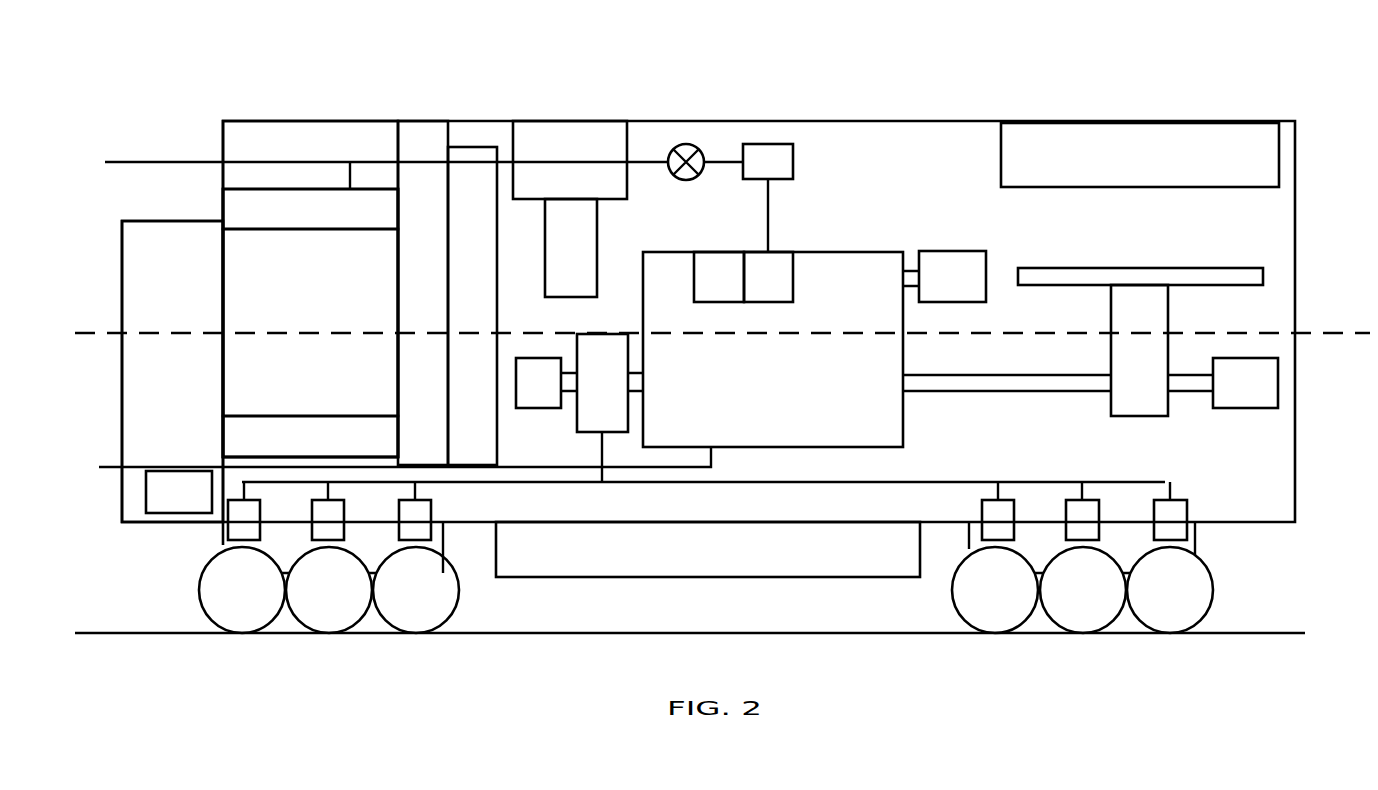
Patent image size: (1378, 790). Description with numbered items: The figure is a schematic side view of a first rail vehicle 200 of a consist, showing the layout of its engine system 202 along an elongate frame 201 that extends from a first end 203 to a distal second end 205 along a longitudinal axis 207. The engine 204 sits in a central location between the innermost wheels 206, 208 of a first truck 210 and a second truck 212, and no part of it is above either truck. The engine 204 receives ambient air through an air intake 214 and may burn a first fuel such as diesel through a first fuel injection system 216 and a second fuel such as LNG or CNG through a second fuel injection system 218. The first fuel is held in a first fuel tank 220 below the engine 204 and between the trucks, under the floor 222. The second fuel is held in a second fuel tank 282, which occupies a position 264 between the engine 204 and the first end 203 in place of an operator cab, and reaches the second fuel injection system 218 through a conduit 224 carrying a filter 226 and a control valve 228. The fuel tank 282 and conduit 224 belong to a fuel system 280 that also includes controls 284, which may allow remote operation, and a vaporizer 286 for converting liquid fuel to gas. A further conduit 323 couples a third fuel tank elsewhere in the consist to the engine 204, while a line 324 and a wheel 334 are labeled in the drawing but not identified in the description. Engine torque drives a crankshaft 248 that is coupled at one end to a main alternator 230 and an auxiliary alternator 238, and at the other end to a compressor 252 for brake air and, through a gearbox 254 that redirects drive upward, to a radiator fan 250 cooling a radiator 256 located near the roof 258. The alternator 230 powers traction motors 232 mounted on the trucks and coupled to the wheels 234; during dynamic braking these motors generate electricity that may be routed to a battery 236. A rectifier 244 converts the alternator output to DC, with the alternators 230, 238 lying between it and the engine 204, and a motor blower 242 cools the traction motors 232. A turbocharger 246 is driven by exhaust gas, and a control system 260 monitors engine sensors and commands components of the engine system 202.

The first rail vehicle 200 is at (968, 55).
The elongate frame 201 is at (1290, 121).
The engine system 202 is at (955, 222).
The first end 203 is at (110, 265).
The engine 204 is at (758, 359).
The second end 205 is at (1320, 300).
The innermost wheels 206 is at (445, 620).
The longitudinal axis 207 is at (117, 330).
The innermost wheels 208 is at (963, 622).
The first truck 210 is at (222, 533).
The second truck 212 is at (1195, 530).
The air intake 214 is at (555, 157).
The first fuel injection system 216 is at (704, 288).
The second fuel injection system 218 is at (753, 288).
The first fuel tank 220 is at (693, 559).
The floor 222 is at (1210, 522).
The conduit 224 is at (640, 161).
The filter 226 is at (779, 180).
The control valve 228 is at (680, 181).
The alternator 230 is at (587, 390).
The traction motors 232 is at (432, 518).
The wheels 234 is at (324, 633).
The battery 236 is at (164, 501).
The auxiliary alternator 238 is at (523, 390).
The motor blower 242 is at (556, 255).
The rectifier 244 is at (457, 311).
The turbocharger 246 is at (937, 287).
The crankshaft 248 is at (973, 375).
The radiator fan 250 is at (1136, 268).
The compressor 252 is at (1230, 392).
The gearbox 254 is at (1125, 359).
The radiator 256 is at (1125, 166).
The roof 258 is at (838, 124).
The control system 260 is at (408, 301).
The position 264 is at (218, 313).
The fuel system 280 is at (205, 402).
The second fuel tank 282 is at (295, 300).
The controls 284 is at (295, 447).
The vaporizer 286 is at (295, 220).
The conduit 323 is at (115, 467).
The upper conduit 324 is at (187, 161).
The rear axle wheel 334 is at (1083, 633).